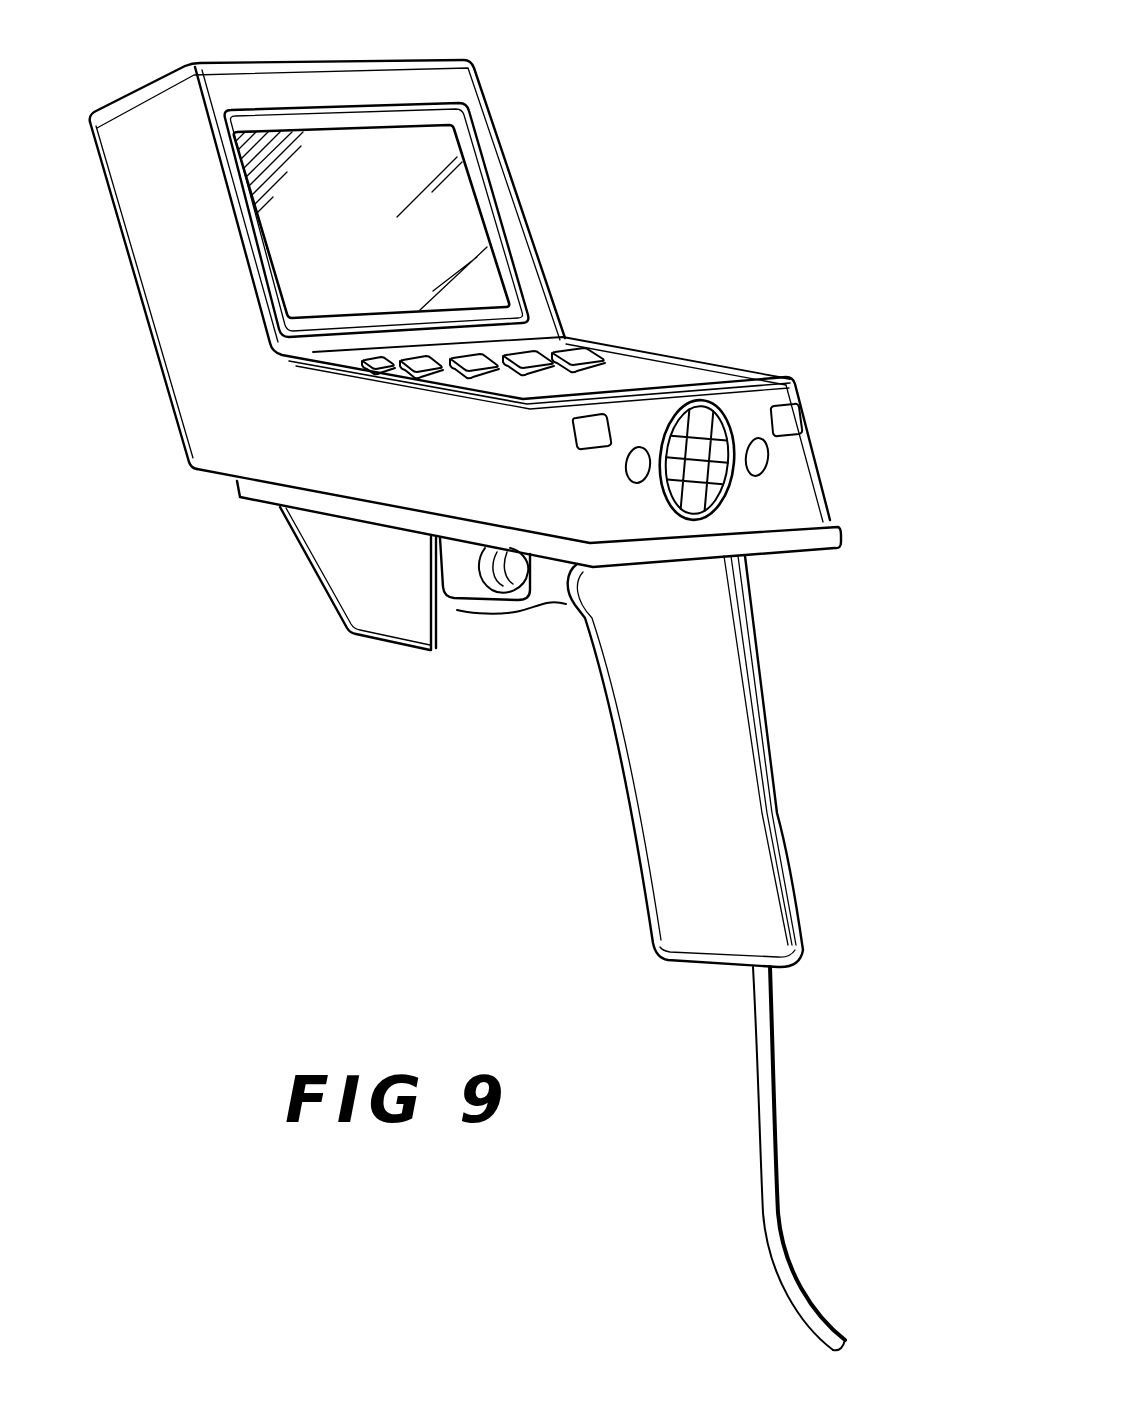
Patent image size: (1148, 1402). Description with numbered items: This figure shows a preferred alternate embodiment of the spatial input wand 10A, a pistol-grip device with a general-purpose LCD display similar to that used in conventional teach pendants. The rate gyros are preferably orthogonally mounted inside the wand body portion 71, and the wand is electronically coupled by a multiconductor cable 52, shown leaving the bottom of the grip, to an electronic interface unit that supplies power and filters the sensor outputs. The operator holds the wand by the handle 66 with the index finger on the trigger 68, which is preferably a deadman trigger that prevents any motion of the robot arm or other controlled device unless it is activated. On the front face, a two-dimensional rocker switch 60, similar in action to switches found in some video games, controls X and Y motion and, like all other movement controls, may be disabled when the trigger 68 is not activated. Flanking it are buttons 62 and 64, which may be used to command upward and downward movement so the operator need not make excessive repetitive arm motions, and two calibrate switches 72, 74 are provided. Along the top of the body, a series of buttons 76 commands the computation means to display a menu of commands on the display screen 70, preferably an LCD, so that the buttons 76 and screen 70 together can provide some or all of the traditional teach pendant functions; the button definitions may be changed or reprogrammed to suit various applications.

The wand 10A is at (657, 78).
The multiconductor cable 52 is at (770, 1130).
The two-dimensional rocker switch 60 is at (693, 427).
The button 62 is at (760, 462).
The button 64 is at (637, 457).
The handle 66 is at (743, 727).
The trigger 68 is at (492, 567).
The display screen 70 is at (452, 190).
The wand body portion 71 is at (227, 462).
The calibrate switch 72 is at (793, 417).
The calibrate switch 74 is at (582, 434).
The buttons 76 is at (570, 352).